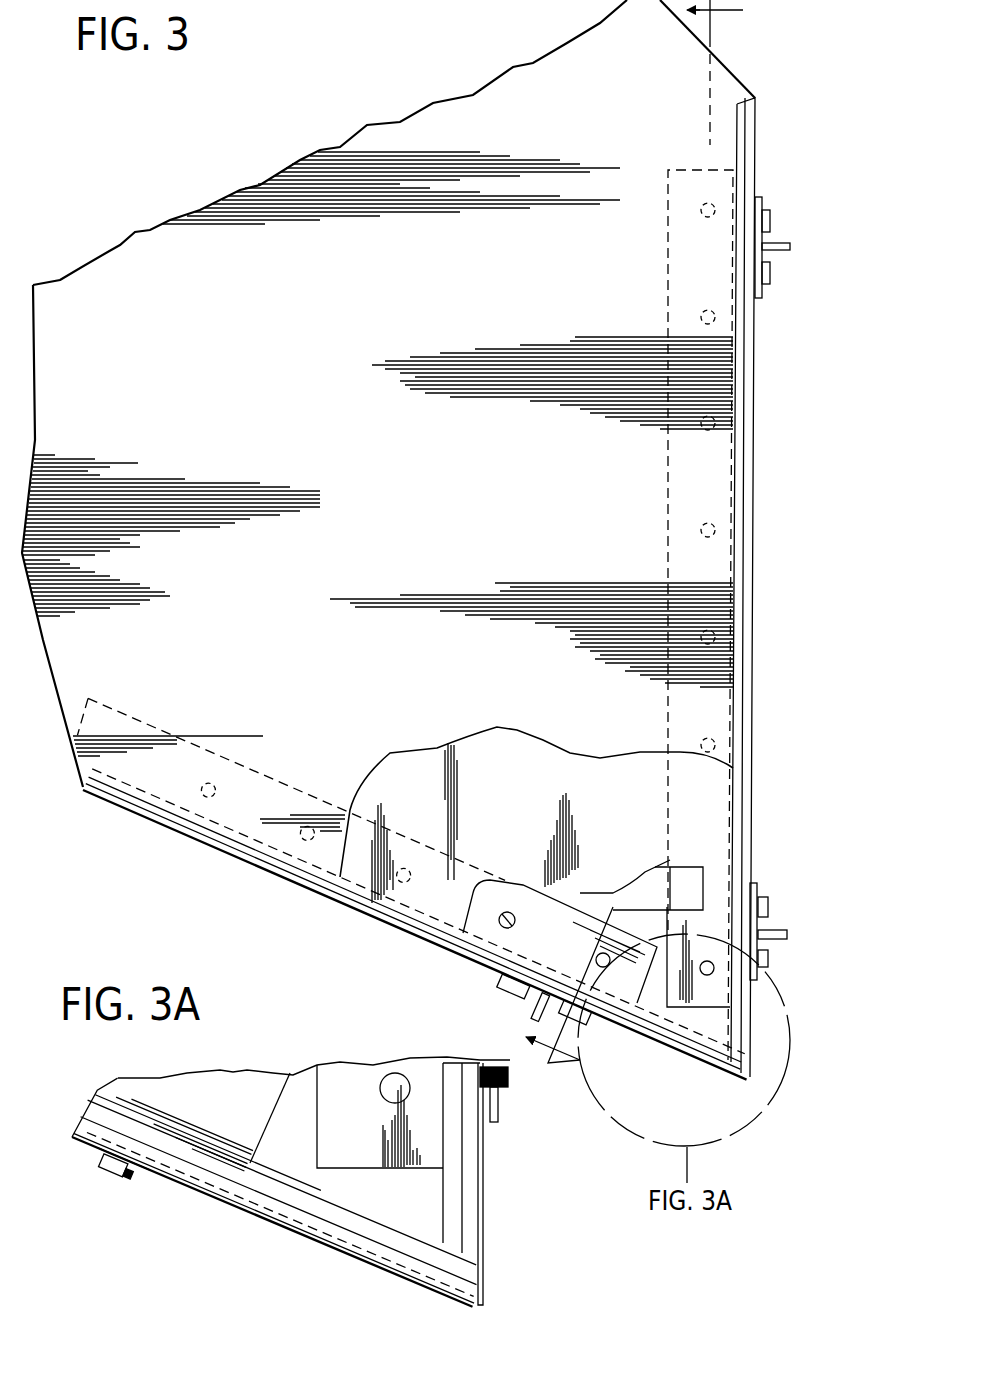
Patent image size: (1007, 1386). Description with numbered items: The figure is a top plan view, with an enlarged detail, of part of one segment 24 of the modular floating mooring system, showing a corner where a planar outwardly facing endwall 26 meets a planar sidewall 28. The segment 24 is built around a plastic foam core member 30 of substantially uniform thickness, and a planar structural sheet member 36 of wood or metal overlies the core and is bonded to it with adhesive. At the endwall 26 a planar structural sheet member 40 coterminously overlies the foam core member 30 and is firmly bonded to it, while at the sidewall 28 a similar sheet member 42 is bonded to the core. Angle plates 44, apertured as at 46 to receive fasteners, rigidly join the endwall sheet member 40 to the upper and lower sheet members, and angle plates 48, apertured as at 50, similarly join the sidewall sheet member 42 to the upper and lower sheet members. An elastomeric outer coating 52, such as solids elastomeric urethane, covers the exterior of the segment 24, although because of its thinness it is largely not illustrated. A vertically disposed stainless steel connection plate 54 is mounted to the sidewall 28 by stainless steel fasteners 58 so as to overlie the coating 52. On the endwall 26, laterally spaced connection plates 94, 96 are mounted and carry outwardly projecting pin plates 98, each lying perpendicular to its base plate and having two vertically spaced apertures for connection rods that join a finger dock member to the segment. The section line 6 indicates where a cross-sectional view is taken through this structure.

In FIG. 3, the segment 24 is at (283, 148).
In FIG. 3, the endwall 26 is at (760, 124).
In FIG. 3, the sidewall 28 is at (655, 1042).
In FIG. 3, the plastic foam core member 30 is at (655, 888).
In FIG. 3A, the plastic foam core member 30 is at (323, 1140).
In FIG. 3, the planar structural sheet member 36 is at (523, 785).
In FIG. 3, the planar structural sheet member 40 is at (748, 862).
In FIG. 3A, the planar structural sheet member 40 is at (466, 1170).
In FIG. 3, the sheet member 42 is at (723, 1062).
In FIG. 3A, the sheet member 42 is at (367, 1244).
In FIG. 3, the angle plate 44 is at (713, 987).
In FIG. 3A, the angle plate 44 is at (363, 1100).
In FIG. 3A, the aperture 46 is at (410, 1103).
In FIG. 3, the angle plate 48 is at (573, 952).
In FIG. 3A, the angle plate 48 is at (223, 1115).
In FIG. 3, the aperture 50 is at (507, 912).
In FIG. 3, the elastomeric outer coating 52 is at (368, 717).
In FIG. 3A, the elastomeric outer coating 52 is at (485, 1210).
In FIG. 3, the connection plate 54 is at (496, 979).
In FIG. 3A, the fastener 58 is at (110, 1180).
In FIG. 3, the section line 6- 6 is at (621, 531).
In FIG. 3, the connection plate 94 is at (771, 233).
In FIG. 3, the connection plate 96 is at (771, 940).
In FIG. 3, the pin plate 98 is at (773, 253).